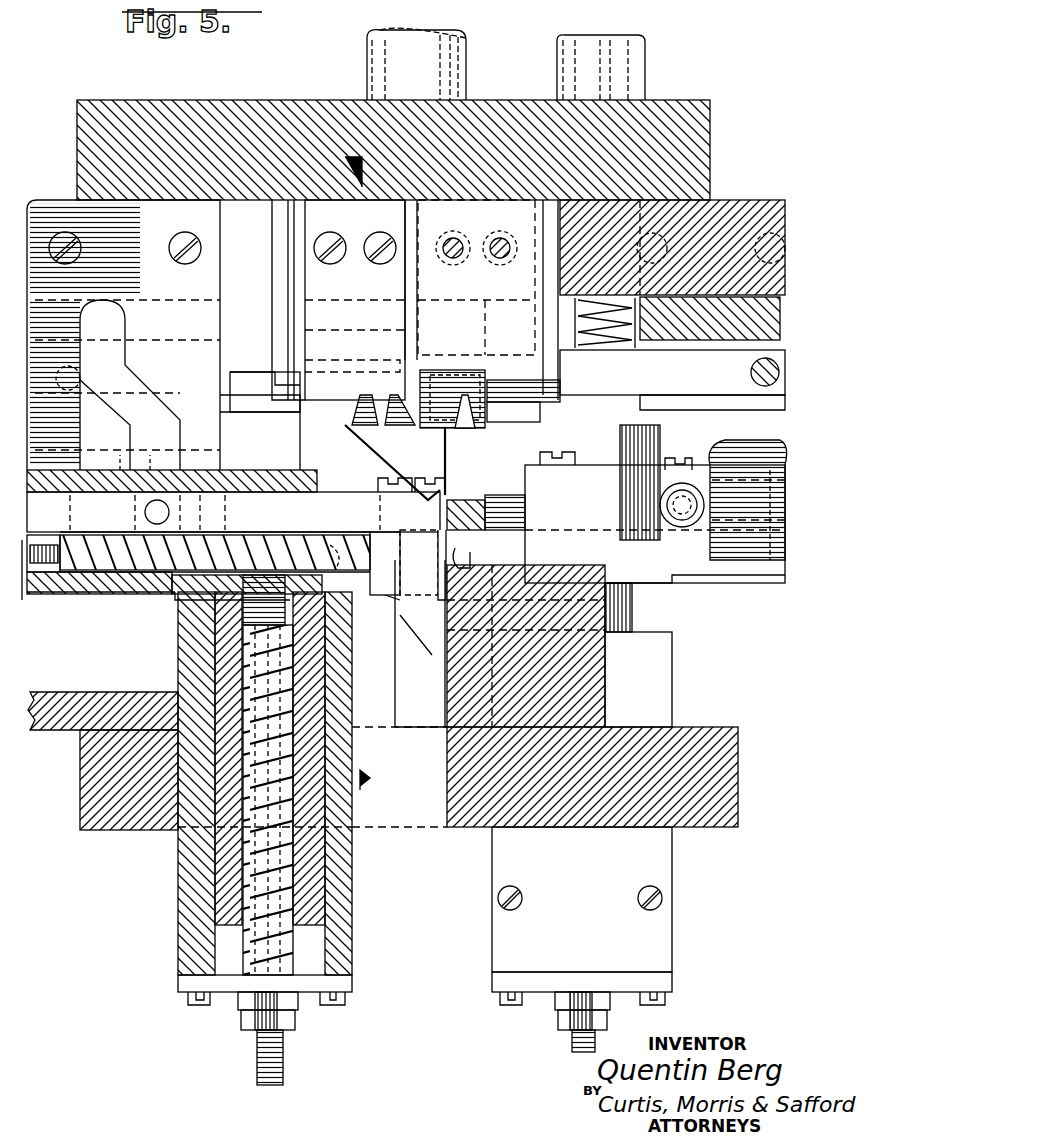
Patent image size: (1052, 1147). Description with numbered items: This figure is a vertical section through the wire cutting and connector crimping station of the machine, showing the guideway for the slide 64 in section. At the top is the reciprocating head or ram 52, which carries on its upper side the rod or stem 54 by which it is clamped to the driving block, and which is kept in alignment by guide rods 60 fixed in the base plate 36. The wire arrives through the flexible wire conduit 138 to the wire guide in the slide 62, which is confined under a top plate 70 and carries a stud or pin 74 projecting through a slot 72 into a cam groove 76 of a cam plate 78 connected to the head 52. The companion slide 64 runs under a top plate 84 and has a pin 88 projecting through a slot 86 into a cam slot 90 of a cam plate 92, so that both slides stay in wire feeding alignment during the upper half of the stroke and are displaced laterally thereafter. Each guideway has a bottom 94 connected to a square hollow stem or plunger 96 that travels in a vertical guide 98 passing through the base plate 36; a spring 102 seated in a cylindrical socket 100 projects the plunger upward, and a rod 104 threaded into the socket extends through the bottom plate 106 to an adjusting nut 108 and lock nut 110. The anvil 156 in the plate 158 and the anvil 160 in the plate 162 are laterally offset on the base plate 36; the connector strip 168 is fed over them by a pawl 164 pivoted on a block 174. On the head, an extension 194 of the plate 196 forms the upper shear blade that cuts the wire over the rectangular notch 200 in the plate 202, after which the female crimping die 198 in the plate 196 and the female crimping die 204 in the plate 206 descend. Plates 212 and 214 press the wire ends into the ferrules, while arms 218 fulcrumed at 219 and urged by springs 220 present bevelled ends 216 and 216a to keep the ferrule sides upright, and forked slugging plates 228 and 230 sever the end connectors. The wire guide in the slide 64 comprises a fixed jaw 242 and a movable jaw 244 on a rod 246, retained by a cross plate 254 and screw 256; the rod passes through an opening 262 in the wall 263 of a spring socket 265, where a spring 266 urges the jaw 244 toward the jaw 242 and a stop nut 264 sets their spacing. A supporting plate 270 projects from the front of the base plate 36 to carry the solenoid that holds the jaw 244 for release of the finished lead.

The base plate 36 is at (98, 765).
The reciprocating head or ram 52 is at (230, 128).
The rod or stem 54 is at (392, 48).
The guide rod 60 is at (628, 58).
The slide 62 is at (505, 500).
The slide 64 is at (322, 490).
The top plate 70 is at (573, 472).
The slot 72 is at (692, 475).
The stud or pin 74 is at (684, 530).
The cam groove 76 is at (718, 460).
The cam plate 78 is at (750, 515).
The top plate 84 is at (240, 480).
The slot 86 is at (118, 465).
The pin or stud 88 is at (148, 470).
The cam slot 90 is at (128, 400).
The cam plate 92 is at (108, 240).
The bottom 94 is at (108, 600).
The stem or plunger 96 is at (630, 605).
The vertical guide 98 is at (665, 660).
The cylindrical socket 100 is at (245, 753).
The spring 102 is at (245, 795).
The rod 104 is at (245, 860).
The bottom plate 106 is at (185, 985).
The adjusting nut 108 is at (242, 1008).
The lock nut 110 is at (292, 1015).
The flexible wire conduit 138 is at (420, 545).
The anvil 156 is at (375, 600).
The plate 158 is at (415, 690).
The anvil 160 is at (465, 583).
The plate 162 is at (548, 580).
The pawl 164 is at (460, 498).
The connector strip 168 is at (470, 560).
The block 174 is at (580, 685).
The extension 194 is at (405, 438).
The plate 196 is at (295, 415).
The female crimping die 198 is at (372, 395).
The rectangular notch 200 is at (435, 590).
The plate 202 is at (448, 640).
The female crimping die 204 is at (458, 380).
The plate 206 is at (540, 414).
The plate 212 is at (350, 228).
The plate 214 is at (478, 215).
The bevelled end 216 is at (345, 390).
The bevelled end 216a is at (490, 385).
The arm 218 is at (650, 380).
The fulcrum 219 is at (78, 370).
The spring 220 is at (595, 297).
The slugging plate 228 is at (350, 430).
The slugging plate 230 is at (478, 425).
The fixed jaw 242 is at (475, 609).
The movable jaw 244 is at (372, 578).
The rod 246 is at (277, 540).
The cross plate 254 is at (380, 486).
The screw 256 is at (420, 470).
The opening 262 is at (55, 585).
The wall 263 is at (46, 536).
The stop nut 264 is at (25, 600).
The spring socket 265 is at (122, 590).
The spring 266 is at (323, 534).
The supporting plate 270 is at (78, 700).